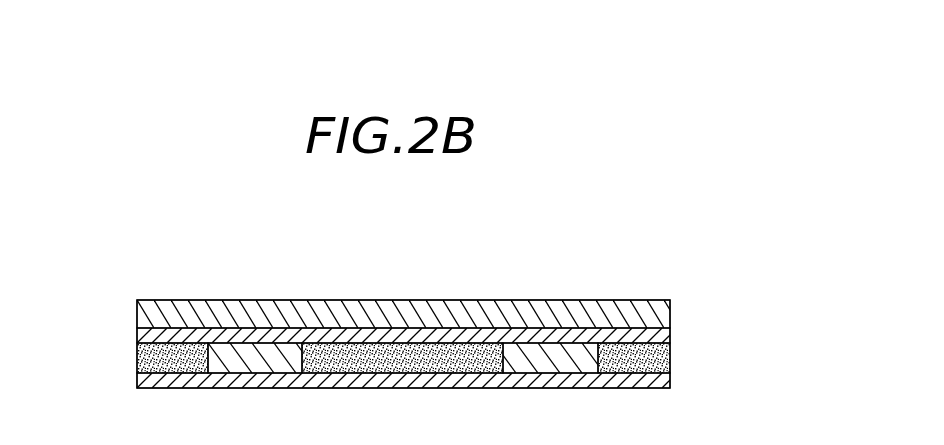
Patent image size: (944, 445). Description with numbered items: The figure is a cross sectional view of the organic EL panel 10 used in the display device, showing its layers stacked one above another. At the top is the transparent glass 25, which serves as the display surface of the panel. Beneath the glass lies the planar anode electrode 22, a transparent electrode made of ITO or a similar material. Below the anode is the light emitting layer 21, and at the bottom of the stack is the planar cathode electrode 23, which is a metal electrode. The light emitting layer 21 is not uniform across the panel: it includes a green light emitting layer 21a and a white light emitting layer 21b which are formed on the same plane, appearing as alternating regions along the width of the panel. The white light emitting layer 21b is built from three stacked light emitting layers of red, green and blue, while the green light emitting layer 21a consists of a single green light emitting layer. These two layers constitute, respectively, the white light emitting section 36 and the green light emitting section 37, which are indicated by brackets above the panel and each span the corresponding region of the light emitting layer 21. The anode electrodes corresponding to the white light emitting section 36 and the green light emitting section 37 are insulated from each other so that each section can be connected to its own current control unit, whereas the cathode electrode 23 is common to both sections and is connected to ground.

The organic EL panel 10 is at (401, 323).
The light emitting layer 21 is at (396, 387).
The green light emitting layer 21a is at (145, 360).
The white light emitting layer 21b is at (250, 358).
The planar anode electrode 22 is at (138, 333).
The planar cathode electrode 23 is at (377, 375).
The transparent glass 25 is at (451, 310).
The white light emitting section 36 is at (298, 292).
The green light emitting section 37 is at (137, 292).